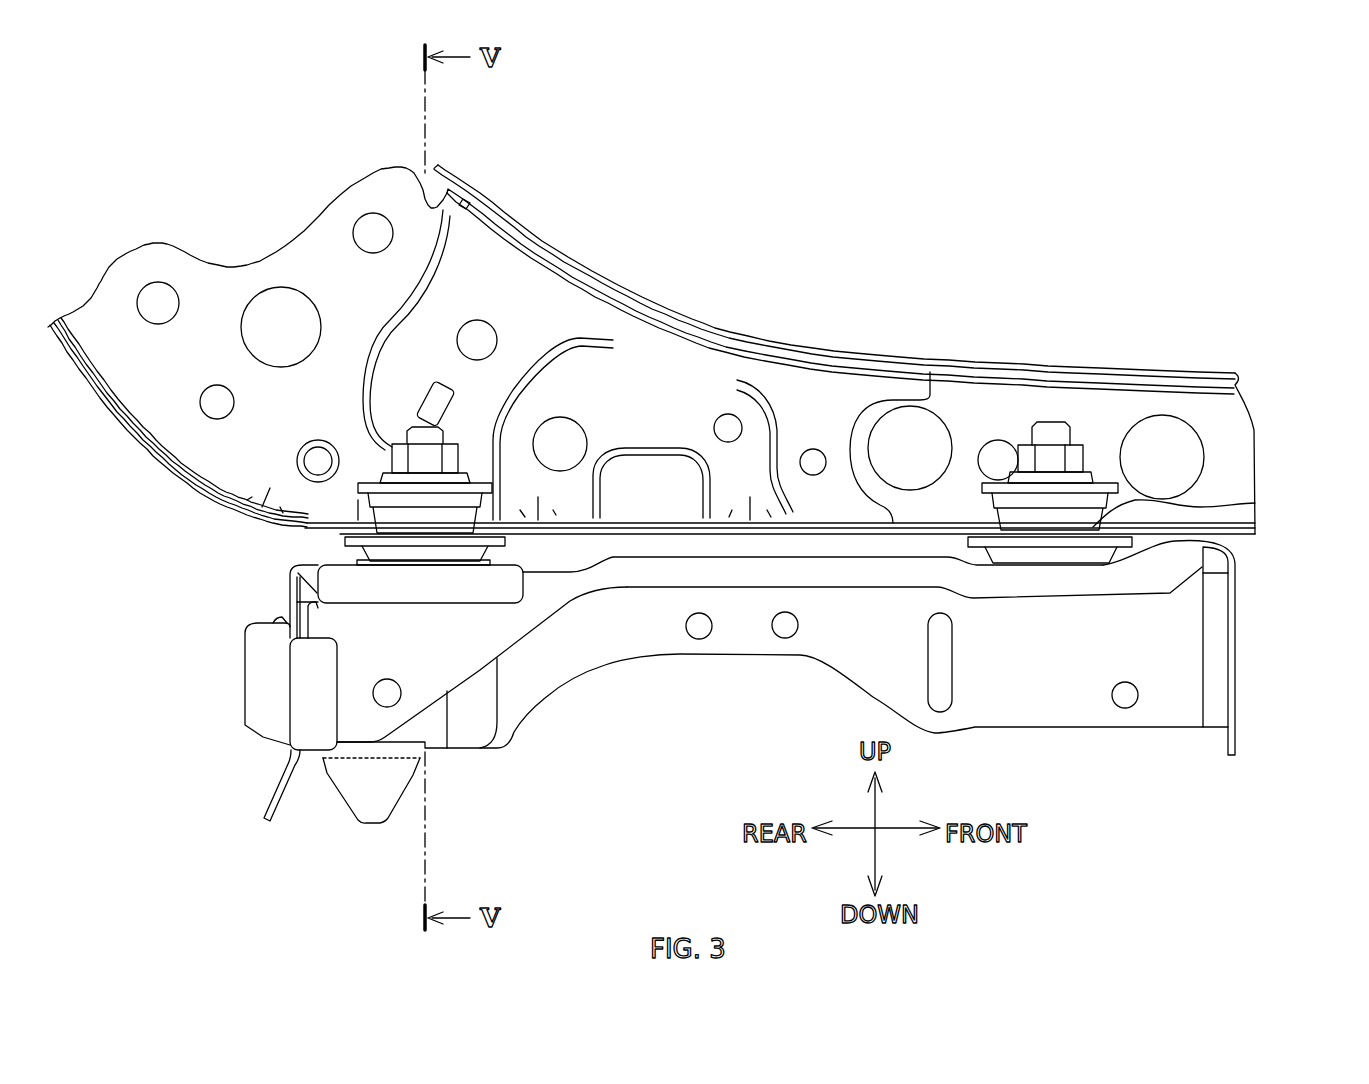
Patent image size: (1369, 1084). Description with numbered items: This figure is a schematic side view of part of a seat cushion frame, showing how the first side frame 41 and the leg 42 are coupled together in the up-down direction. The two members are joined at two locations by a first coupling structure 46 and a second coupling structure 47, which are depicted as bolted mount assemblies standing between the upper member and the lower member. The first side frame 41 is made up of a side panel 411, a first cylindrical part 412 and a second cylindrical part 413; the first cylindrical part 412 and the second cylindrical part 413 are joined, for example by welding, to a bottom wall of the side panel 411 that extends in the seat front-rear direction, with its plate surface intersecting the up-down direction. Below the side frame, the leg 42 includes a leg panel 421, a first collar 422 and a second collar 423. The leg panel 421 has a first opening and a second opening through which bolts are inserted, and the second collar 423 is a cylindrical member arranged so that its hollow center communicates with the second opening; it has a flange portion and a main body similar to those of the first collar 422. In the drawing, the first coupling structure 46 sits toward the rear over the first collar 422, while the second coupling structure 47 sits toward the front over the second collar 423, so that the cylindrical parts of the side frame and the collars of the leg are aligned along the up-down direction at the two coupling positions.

The first side frame 41 is at (1005, 353).
The side panel 411 is at (1232, 450).
The first cylindrical part 412 is at (378, 524).
The second cylindrical part 413 is at (1225, 514).
The leg 42 is at (1077, 728).
The leg panel 421 is at (1185, 662).
The first collar 422 is at (362, 562).
The second collar 423 is at (1236, 548).
The first coupling structure 46 is at (378, 458).
The second coupling structure 47 is at (1078, 410).